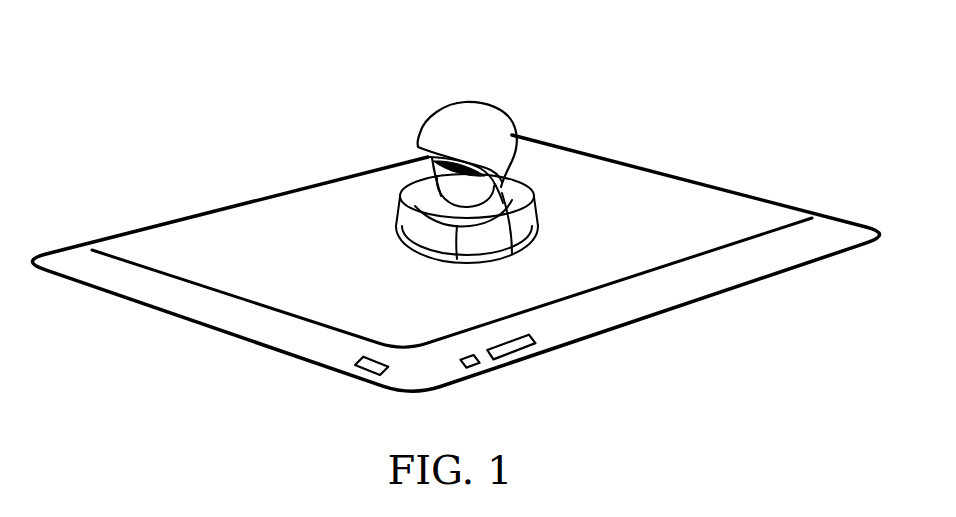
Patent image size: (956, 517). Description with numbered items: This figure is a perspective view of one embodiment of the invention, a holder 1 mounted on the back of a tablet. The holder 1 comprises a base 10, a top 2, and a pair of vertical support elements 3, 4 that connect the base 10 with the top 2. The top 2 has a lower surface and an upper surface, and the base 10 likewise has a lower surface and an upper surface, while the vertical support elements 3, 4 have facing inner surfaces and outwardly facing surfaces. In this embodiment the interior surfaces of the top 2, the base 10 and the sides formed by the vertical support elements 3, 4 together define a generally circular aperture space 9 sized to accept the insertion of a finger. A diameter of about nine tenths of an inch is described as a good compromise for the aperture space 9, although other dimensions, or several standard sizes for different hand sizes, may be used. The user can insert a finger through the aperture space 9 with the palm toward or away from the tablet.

The holder 1 is at (542, 98).
The top 2 is at (473, 120).
The vertical support element 3 is at (532, 208).
The vertical support element 4 is at (419, 170).
The aperture space 9 is at (445, 189).
The base 10 is at (528, 230).